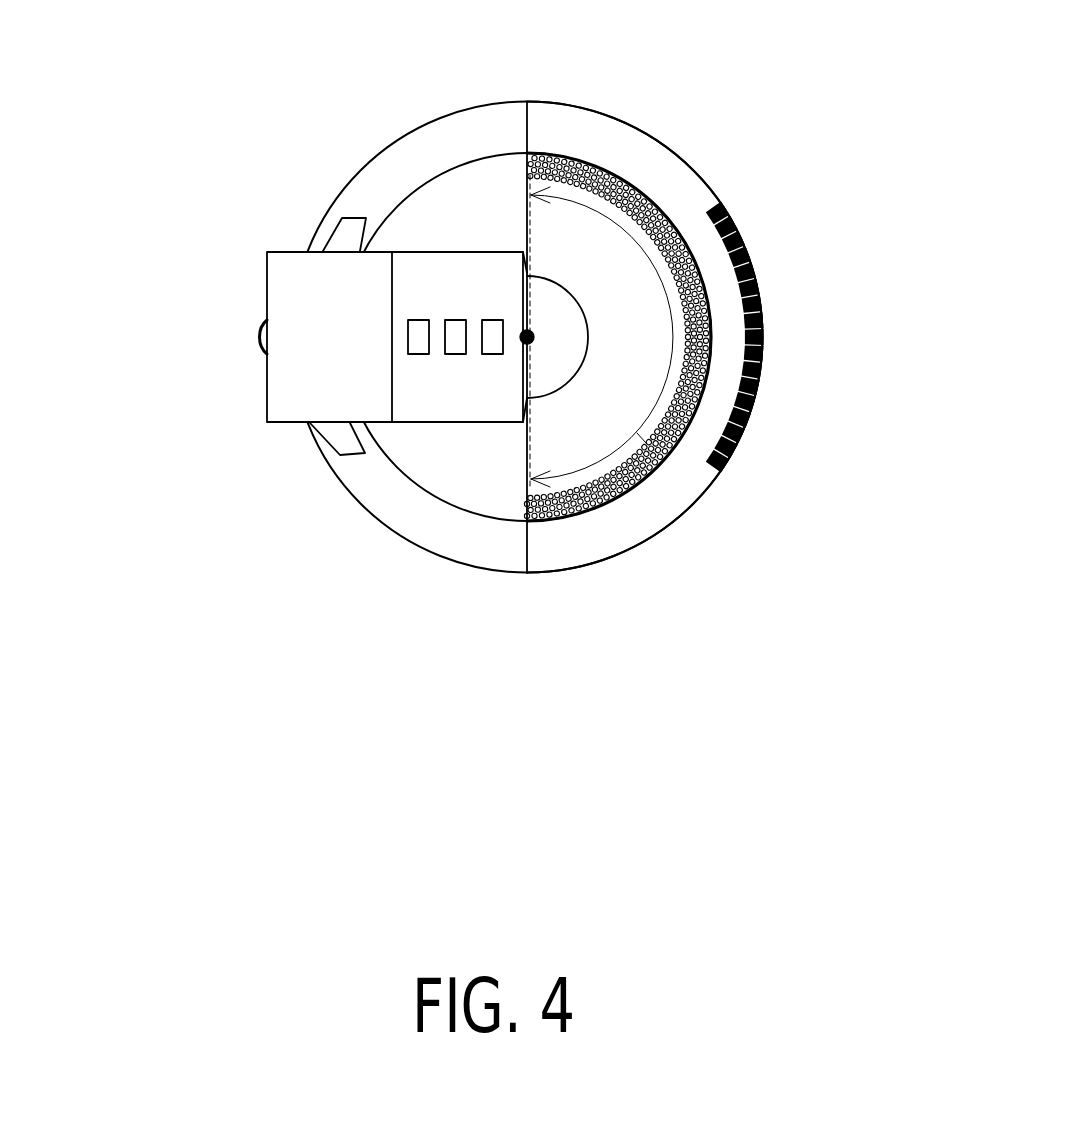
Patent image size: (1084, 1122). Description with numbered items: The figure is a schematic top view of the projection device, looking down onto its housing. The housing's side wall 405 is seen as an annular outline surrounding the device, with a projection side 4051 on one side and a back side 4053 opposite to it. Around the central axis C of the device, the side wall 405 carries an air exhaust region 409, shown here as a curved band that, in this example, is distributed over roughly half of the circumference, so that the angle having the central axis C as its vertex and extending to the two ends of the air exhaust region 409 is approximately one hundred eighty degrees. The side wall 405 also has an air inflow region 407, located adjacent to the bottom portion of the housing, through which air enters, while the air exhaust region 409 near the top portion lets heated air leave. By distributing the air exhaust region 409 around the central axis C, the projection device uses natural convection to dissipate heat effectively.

The side wall 405 is at (625, 143).
The projection side 4051 is at (245, 335).
The back side 4053 is at (780, 297).
The air inflow region 407 is at (748, 247).
The air exhaust region 409 is at (683, 207).
The central axis C is at (527, 337).